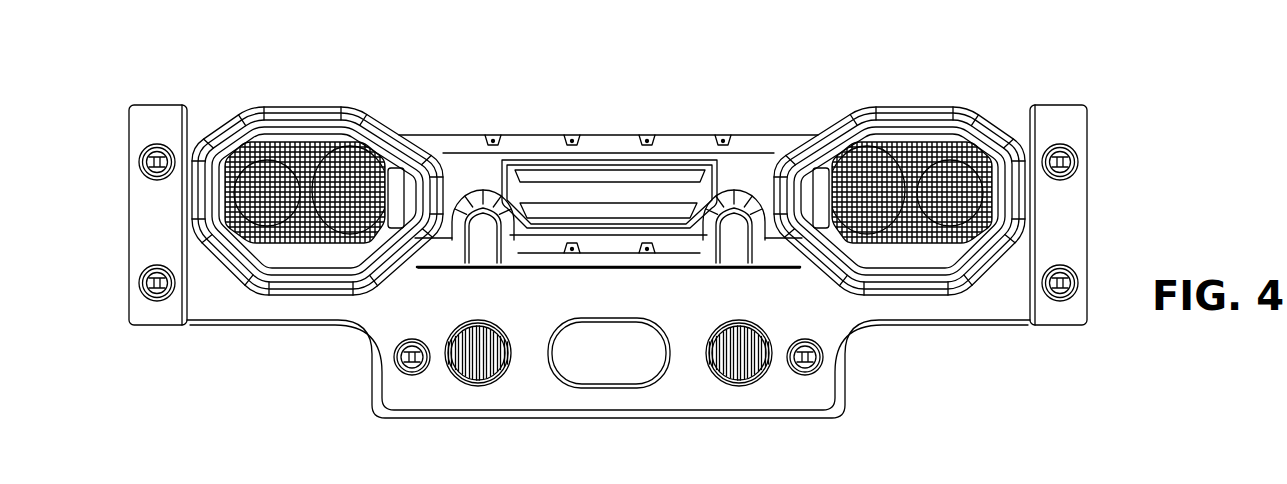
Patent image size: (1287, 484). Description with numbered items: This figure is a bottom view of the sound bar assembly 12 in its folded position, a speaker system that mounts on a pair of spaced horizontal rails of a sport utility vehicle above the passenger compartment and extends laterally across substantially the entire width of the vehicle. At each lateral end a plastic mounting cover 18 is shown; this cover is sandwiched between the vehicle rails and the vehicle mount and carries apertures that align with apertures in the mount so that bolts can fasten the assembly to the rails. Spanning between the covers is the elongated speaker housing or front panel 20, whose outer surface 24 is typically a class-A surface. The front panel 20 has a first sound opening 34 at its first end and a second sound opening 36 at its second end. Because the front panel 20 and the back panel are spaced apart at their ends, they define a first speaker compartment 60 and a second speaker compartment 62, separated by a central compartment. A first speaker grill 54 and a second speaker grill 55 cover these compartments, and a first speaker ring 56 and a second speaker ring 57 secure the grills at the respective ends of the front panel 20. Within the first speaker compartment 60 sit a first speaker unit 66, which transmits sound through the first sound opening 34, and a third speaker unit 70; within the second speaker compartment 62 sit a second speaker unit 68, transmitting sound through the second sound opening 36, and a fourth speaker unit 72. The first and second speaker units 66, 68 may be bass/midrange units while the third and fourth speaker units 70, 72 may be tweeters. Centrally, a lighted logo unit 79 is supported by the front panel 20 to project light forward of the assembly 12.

The sound bar assembly 12 is at (853, 423).
The plastic mounting cover 18 is at (1090, 190).
The speaker housing or front panel 20 is at (817, 127).
The outer surface 24 is at (740, 172).
The first sound opening 34 is at (350, 155).
The second sound opening 36 is at (875, 247).
The speaker grill 54 is at (333, 143).
The speaker grill 55 is at (877, 157).
The speaker ring 56 is at (230, 133).
The speaker ring 57 is at (858, 137).
The first speaker compartment 60 is at (317, 237).
The second speaker compartment 62 is at (932, 245).
The first speaker unit 66 is at (252, 242).
The second speaker unit 68 is at (972, 248).
The third speaker unit 70 is at (392, 162).
The fourth speaker unit 72 is at (830, 197).
The lighted logo unit 79 is at (655, 188).